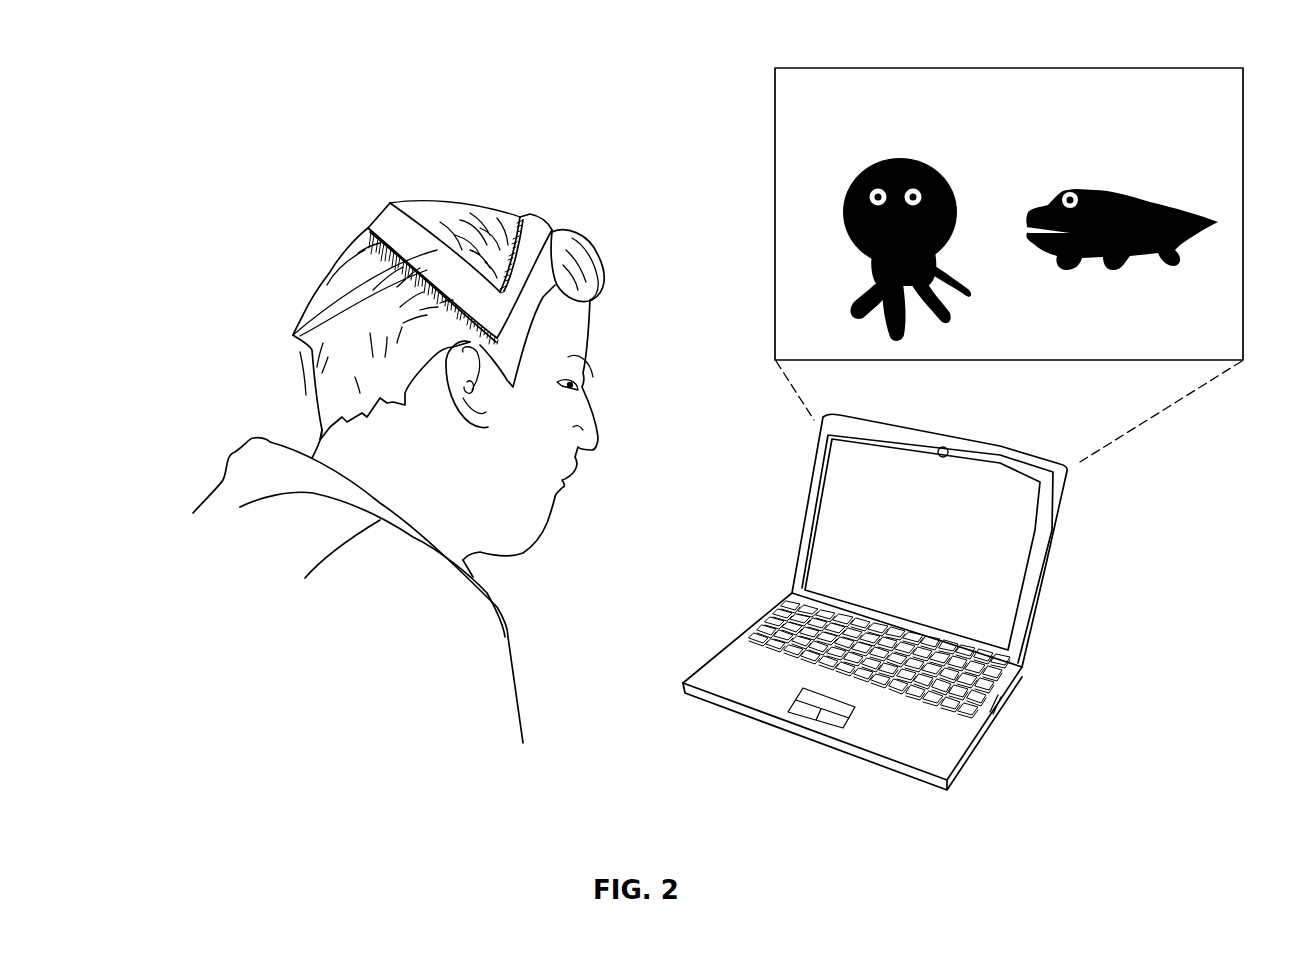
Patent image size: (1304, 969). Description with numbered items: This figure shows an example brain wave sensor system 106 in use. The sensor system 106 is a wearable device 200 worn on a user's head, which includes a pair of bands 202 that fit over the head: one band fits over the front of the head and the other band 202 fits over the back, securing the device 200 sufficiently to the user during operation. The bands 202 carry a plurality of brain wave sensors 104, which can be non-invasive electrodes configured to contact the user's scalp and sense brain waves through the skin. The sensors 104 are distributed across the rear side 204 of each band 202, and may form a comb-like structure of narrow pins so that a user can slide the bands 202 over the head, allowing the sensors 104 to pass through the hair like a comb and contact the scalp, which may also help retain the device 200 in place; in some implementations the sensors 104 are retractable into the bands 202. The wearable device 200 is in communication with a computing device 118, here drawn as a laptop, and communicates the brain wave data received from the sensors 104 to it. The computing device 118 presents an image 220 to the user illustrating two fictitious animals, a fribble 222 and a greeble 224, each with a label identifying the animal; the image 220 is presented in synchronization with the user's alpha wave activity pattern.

The brain wave sensors 104 is at (293, 335).
The brain wave sensor system 106 is at (285, 121).
The computing device 118 is at (1047, 572).
The wearable device 200 is at (558, 312).
The bands 202 is at (390, 204).
The rear side 204 is at (370, 233).
The image 220 is at (763, 121).
The fribble 222 is at (853, 292).
The greeble 224 is at (1145, 258).